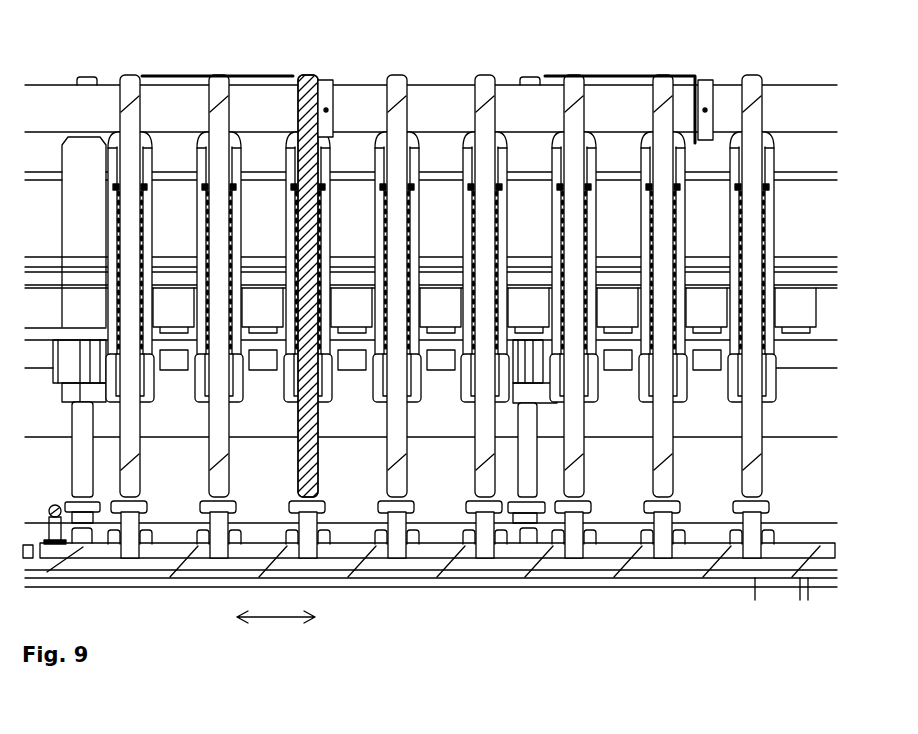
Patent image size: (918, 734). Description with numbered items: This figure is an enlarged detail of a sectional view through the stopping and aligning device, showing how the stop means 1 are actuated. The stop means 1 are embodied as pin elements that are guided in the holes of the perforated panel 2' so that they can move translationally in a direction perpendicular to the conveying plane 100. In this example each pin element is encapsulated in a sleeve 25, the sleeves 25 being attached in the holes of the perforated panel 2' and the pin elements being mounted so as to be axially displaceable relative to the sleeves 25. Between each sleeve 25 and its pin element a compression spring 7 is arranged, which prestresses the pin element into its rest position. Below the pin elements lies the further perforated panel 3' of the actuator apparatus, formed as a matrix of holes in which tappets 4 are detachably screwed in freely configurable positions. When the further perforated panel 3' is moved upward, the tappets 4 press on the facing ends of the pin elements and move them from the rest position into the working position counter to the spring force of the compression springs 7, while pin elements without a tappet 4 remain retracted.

The stop means 1 is at (217, 108).
The perforated panel 2' is at (444, 185).
The further perforated panel 3' is at (437, 606).
The tappet 4 is at (487, 523).
The compression spring 7 is at (230, 252).
The sleeve 25 is at (200, 257).
The conveying plane 100 is at (278, 617).